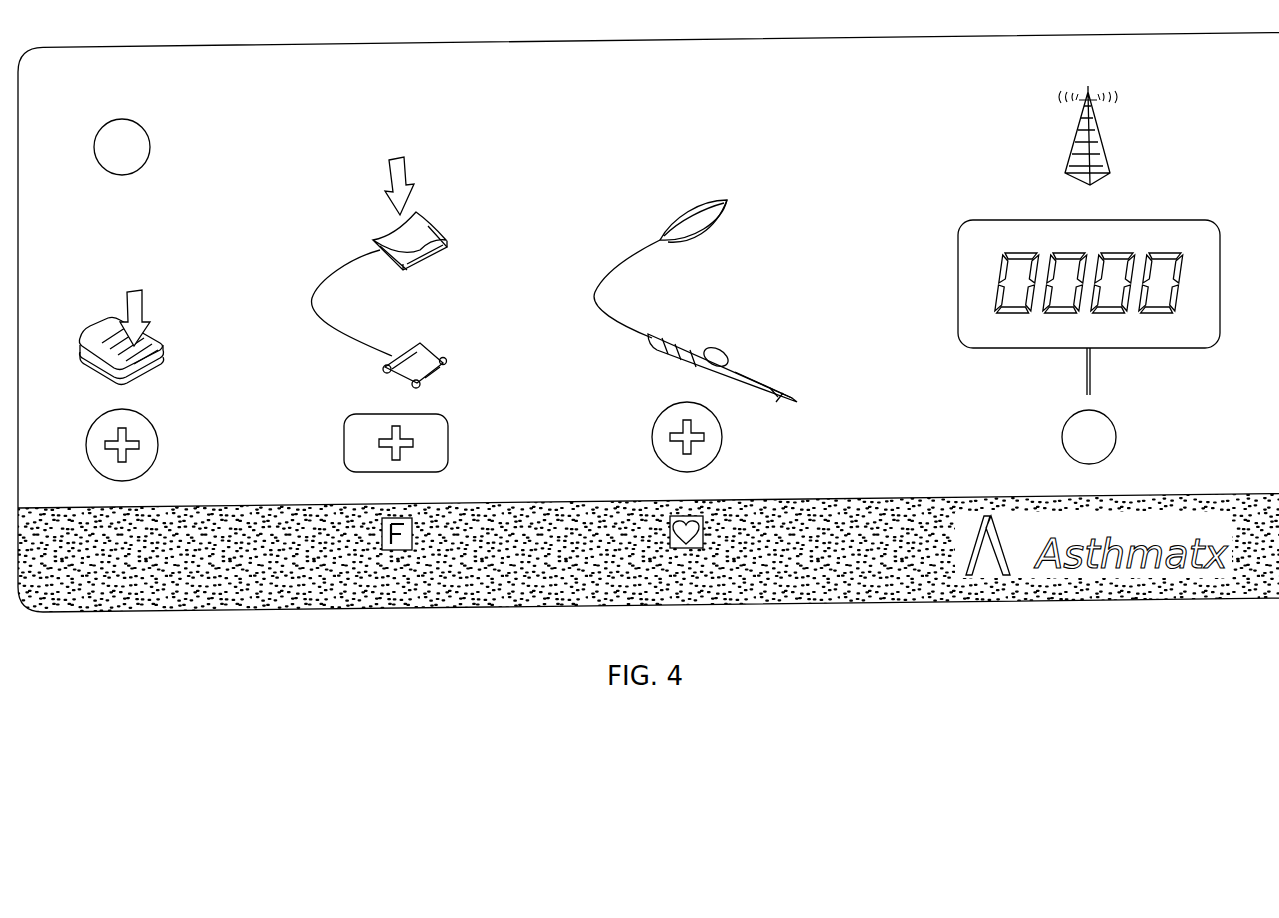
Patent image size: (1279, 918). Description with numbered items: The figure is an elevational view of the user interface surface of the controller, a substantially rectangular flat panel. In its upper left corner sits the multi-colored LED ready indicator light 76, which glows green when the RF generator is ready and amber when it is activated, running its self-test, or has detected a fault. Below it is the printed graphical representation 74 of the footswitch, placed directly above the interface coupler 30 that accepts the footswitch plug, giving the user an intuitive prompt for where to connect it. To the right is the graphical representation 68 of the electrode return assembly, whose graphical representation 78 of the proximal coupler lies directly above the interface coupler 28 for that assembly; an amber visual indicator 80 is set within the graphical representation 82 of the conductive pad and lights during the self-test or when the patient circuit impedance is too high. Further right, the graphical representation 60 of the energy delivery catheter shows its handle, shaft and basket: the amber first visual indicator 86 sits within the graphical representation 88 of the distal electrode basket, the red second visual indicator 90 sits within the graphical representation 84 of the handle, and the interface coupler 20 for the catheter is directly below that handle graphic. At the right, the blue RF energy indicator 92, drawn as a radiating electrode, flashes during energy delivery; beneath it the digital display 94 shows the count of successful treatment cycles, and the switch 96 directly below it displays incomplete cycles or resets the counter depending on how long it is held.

The interface coupler 20 is at (722, 435).
The interface coupler 28 is at (450, 443).
The interface coupler 30 is at (158, 443).
The graphical representation of the energy delivery catheter 60 is at (612, 268).
The graphical representation of the electrode return assembly 68 is at (326, 280).
The graphical representation of the footswitch 74 is at (92, 340).
The ready indicator light 76 is at (120, 130).
The graphical representation of the proximal coupler 78 is at (420, 349).
The visual indicator 80 is at (420, 229).
The graphical representation of the conductive pad 82 is at (435, 256).
The graphical representation of the handle 84 is at (765, 386).
The first visual indicator 86 is at (683, 213).
The graphical representation of the distal electrode basket 88 is at (712, 230).
The second visual indicator 90 is at (697, 360).
The RF energy indicator 92 is at (1112, 162).
The digital display 94 is at (957, 285).
The switch 96 is at (1117, 437).